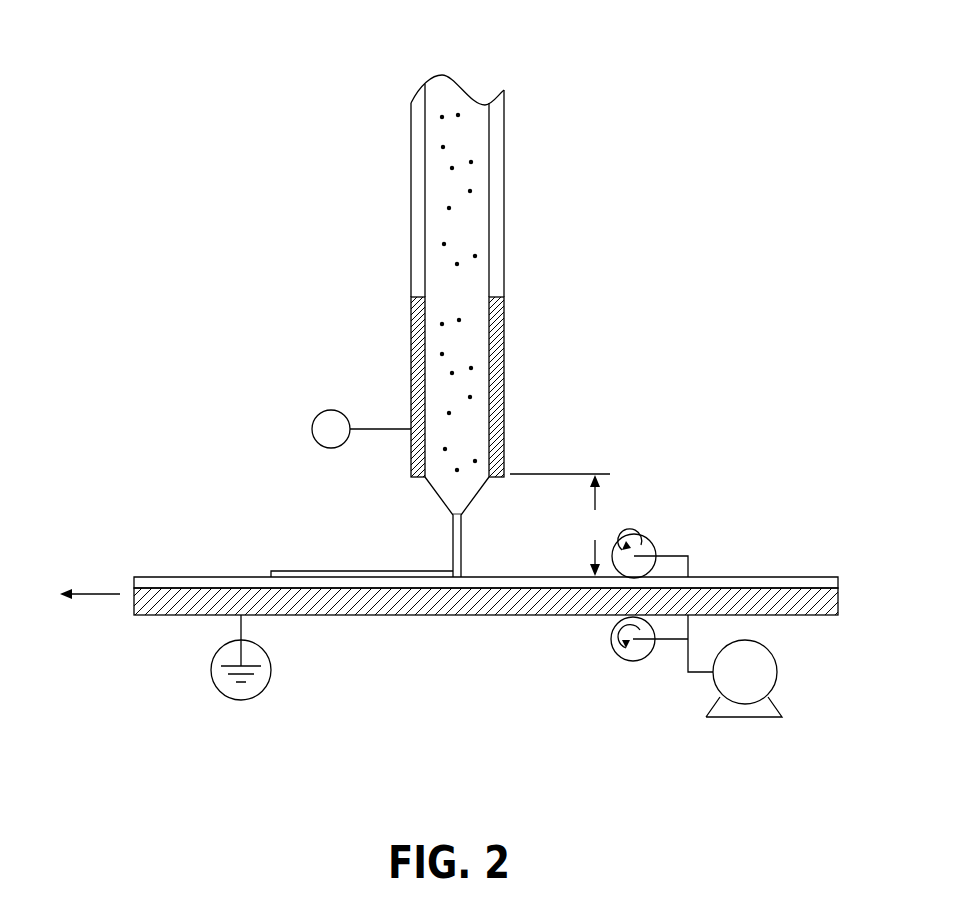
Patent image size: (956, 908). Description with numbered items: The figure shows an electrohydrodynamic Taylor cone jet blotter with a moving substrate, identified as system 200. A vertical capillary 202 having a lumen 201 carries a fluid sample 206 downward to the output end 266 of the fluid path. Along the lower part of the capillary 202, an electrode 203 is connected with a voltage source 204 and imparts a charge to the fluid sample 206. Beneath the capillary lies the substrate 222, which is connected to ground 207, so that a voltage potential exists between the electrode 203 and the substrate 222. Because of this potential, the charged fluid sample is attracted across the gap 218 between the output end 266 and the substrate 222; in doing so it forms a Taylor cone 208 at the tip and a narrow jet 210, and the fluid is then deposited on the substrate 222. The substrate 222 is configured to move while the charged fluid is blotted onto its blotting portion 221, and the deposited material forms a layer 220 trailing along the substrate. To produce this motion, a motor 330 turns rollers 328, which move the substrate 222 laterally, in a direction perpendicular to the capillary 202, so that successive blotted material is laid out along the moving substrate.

The system 200 is at (312, 78).
The lumen 201 is at (445, 207).
The capillary 202 is at (411, 172).
The electrode 203 is at (411, 333).
The voltage source 204 is at (311, 427).
The fluid sample 206 is at (471, 300).
The ground 207 is at (243, 700).
The Taylor cone 208 is at (490, 498).
The jet 210 is at (452, 525).
The gap 218 is at (562, 525).
The printed film 220 is at (297, 570).
The blotting portion 221 is at (170, 577).
The substrate 222 is at (168, 617).
The output end 266 is at (453, 483).
The rollers 328 is at (630, 663).
The motor 330 is at (777, 660).